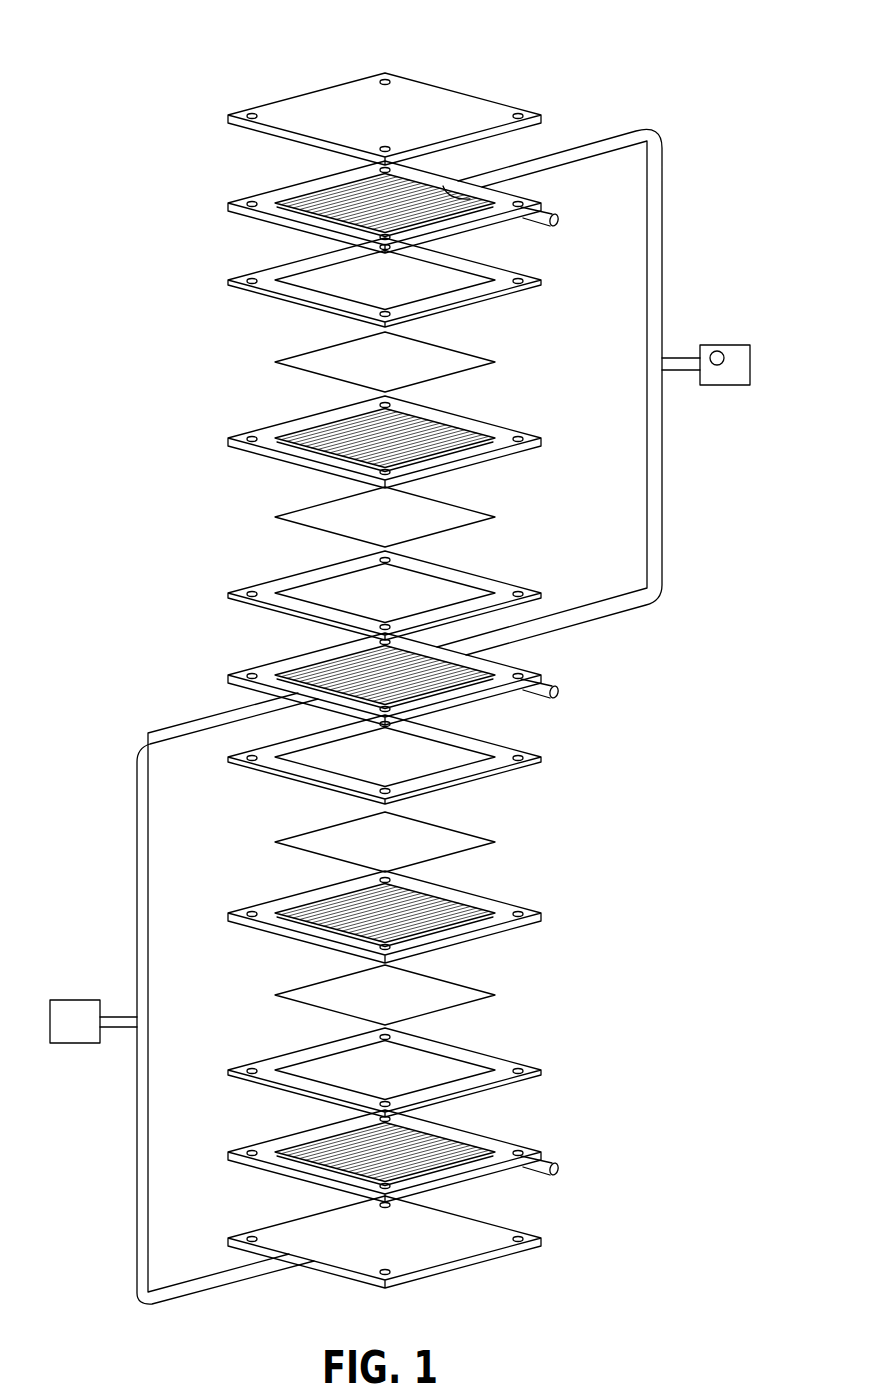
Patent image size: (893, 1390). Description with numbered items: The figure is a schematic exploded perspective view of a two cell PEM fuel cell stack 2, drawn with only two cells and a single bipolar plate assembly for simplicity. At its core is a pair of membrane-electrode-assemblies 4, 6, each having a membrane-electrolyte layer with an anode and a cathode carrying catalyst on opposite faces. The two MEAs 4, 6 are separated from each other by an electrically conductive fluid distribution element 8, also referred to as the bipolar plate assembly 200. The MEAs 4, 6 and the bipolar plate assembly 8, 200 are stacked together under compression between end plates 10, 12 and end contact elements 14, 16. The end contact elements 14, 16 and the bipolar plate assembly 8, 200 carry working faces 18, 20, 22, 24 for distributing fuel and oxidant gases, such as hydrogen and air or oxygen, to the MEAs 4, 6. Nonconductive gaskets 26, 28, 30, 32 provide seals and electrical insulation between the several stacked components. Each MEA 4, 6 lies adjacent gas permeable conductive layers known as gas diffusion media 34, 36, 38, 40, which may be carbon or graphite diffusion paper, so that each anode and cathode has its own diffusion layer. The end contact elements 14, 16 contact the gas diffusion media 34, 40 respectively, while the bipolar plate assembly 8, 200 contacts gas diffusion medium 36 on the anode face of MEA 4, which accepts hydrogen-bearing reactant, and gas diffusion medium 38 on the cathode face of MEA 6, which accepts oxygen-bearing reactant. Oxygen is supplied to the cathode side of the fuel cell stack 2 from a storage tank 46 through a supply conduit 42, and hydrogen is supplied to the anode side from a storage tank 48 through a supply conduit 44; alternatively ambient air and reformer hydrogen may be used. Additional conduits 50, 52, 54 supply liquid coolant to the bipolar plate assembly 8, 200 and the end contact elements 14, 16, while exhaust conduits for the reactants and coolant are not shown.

The PEM fuel cell stack 2 is at (702, 86).
The membrane-electrode-assembly 4 is at (275, 450).
The membrane-electrode-assembly 6 is at (473, 894).
The electrically conductive fluid distribution element 8 is at (413, 682).
The bipolar plate assembly 200 is at (413, 682).
The end plate 10 is at (270, 135).
The end plate 12 is at (520, 1231).
The end contact element 14 is at (394, 209).
The end contact element 16 is at (432, 1149).
The working face 18 is at (447, 199).
The working face 20 is at (395, 682).
The working face 22 is at (462, 680).
The working face 24 is at (475, 1146).
The nonconductive gasket 26 is at (273, 297).
The nonconductive gasket 28 is at (275, 610).
The nonconductive gasket 30 is at (530, 756).
The nonconductive gasket 32 is at (490, 1054).
The gas diffusion medium 34 is at (312, 372).
The gas diffusion medium 36 is at (320, 529).
The gas diffusion medium 38 is at (475, 836).
The gas diffusion medium 40 is at (470, 988).
The supply conduit 42 is at (664, 452).
The supply conduit 44 is at (137, 762).
The storage tank 46 is at (737, 345).
The storage tank 48 is at (76, 1000).
The coolant conduit 50 is at (558, 224).
The coolant conduit 52 is at (558, 696).
The coolant conduit 54 is at (560, 1165).